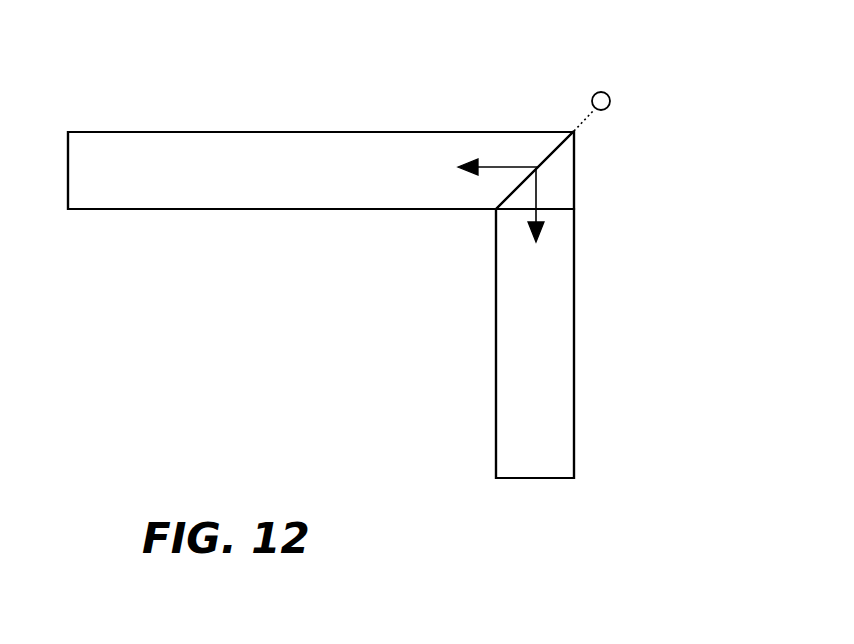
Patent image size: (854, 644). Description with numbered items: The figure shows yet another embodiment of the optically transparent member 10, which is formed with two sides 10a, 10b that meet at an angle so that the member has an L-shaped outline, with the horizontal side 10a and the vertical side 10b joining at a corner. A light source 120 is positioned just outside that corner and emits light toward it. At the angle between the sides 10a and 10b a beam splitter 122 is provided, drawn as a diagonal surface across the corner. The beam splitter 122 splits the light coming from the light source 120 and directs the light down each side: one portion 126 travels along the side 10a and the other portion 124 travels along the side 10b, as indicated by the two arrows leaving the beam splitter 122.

The optically transparent member 10 is at (272, 351).
The side 10a is at (232, 210).
The side 10b is at (575, 367).
The light source 120 is at (603, 92).
The beam splitter 122 is at (548, 152).
The light path in second section 124 is at (537, 200).
The light path in first section 126 is at (508, 167).